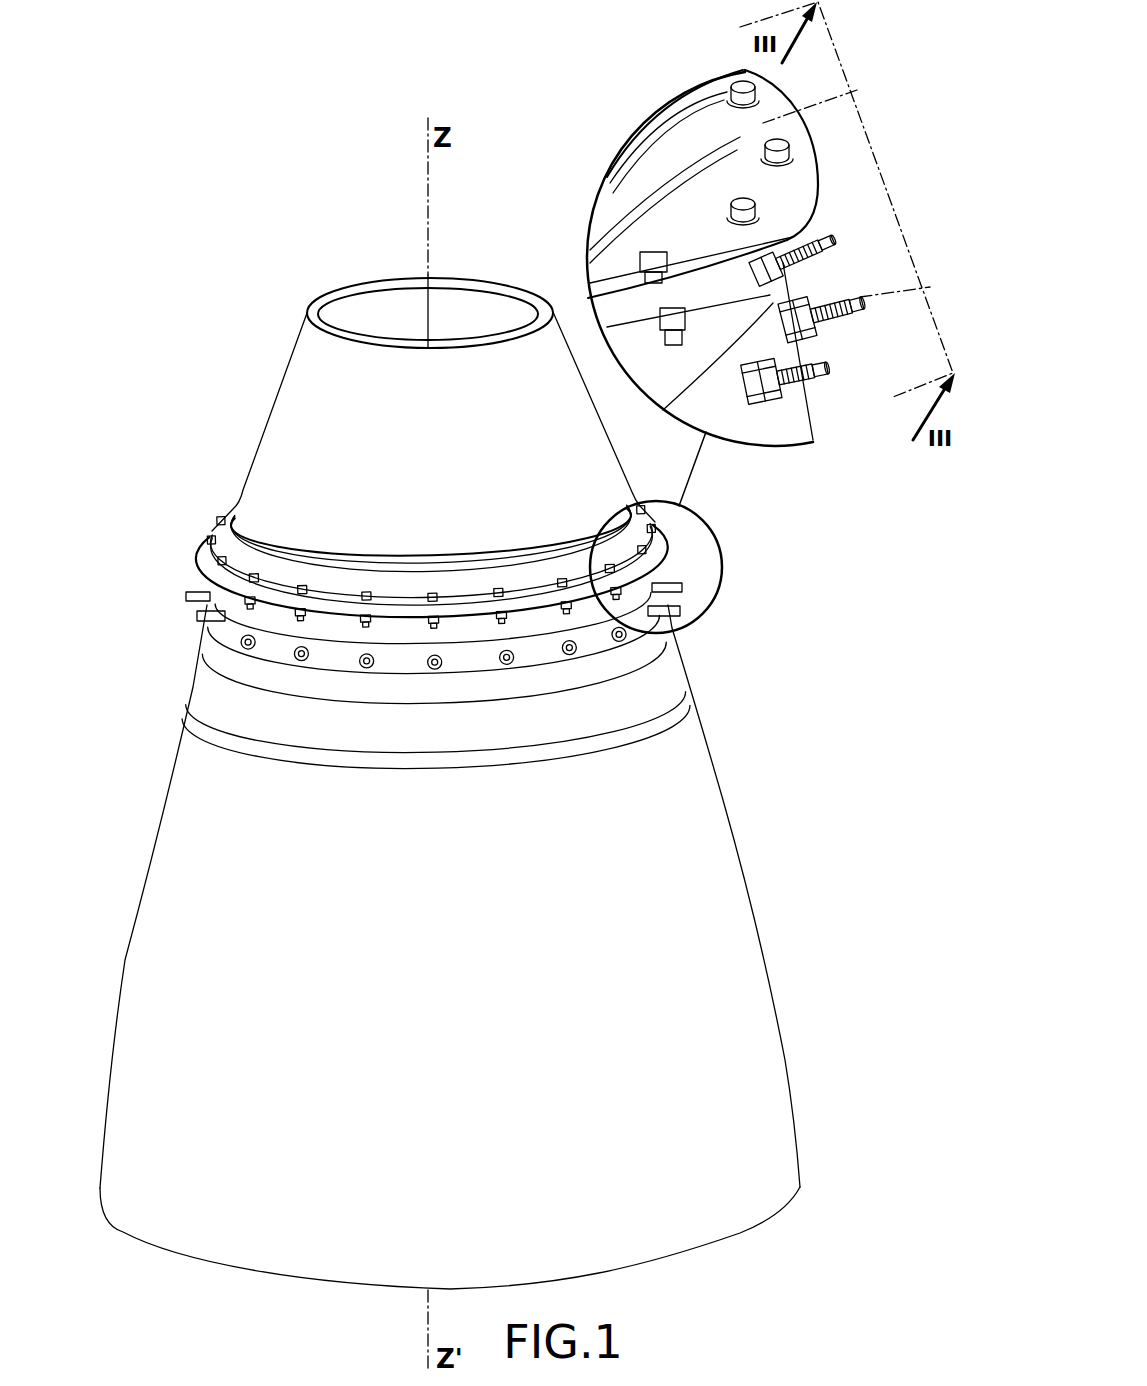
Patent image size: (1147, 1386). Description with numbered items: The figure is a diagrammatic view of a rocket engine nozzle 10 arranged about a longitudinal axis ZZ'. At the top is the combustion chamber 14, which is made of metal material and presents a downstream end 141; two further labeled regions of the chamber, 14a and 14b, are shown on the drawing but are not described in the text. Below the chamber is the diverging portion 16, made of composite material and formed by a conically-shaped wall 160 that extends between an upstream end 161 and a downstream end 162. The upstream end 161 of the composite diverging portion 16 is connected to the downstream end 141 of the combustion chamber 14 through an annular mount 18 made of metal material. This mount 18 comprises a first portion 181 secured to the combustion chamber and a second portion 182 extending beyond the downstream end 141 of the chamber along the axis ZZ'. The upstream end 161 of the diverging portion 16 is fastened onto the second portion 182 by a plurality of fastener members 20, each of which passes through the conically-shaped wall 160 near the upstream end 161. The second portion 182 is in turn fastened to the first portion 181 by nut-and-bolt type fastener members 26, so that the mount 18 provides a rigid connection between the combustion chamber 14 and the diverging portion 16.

The rocket engine nozzle 10 is at (200, 455).
The combustion chamber 14 is at (308, 371).
The inlet opening of combustion chamber 14a is at (513, 312).
The outer surface of combustion chamber 14b is at (587, 459).
The downstream end of the combustion chamber 141 is at (313, 576).
The diverging portion 16 is at (776, 800).
The conically-shaped wall 160 is at (775, 968).
The upstream end of the diverging portion 161 is at (655, 662).
The downstream end of the diverging portion 162 is at (758, 1165).
The annular mount 18 is at (192, 578).
The first portion of the annular mount 181 is at (775, 110).
The second portion of the annular mount 182 is at (677, 370).
The fastener members 20 is at (353, 667).
The nut-and-bolt type fastener members 26 is at (495, 628).